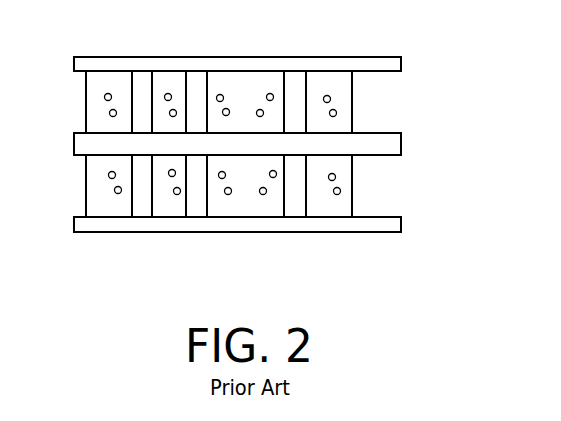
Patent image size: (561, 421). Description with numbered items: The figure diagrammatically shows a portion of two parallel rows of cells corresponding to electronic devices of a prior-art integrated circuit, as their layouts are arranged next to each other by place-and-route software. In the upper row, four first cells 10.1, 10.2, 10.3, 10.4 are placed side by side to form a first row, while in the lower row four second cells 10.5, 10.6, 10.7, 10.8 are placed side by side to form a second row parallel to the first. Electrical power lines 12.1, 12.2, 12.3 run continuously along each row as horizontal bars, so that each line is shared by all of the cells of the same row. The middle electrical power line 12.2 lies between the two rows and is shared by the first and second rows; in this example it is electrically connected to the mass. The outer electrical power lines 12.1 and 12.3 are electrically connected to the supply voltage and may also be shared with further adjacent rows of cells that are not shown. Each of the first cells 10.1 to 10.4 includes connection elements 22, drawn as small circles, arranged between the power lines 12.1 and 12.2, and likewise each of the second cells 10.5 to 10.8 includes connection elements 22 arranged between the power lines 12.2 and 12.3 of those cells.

The first cell 10.1 is at (115, 83).
The first cell 10.2 is at (175, 83).
The first cell 10.3 is at (247, 83).
The first cell 10.4 is at (327, 83).
The second cell 10.5 is at (102, 197).
The second cell 10.6 is at (168, 210).
The second cell 10.7 is at (247, 210).
The second cell 10.8 is at (330, 210).
The electrical power line 12.1 is at (392, 64).
The electrical power line 12.2 is at (392, 147).
The electrical power line 12.3 is at (392, 224).
The connection elements 22 is at (109, 113).